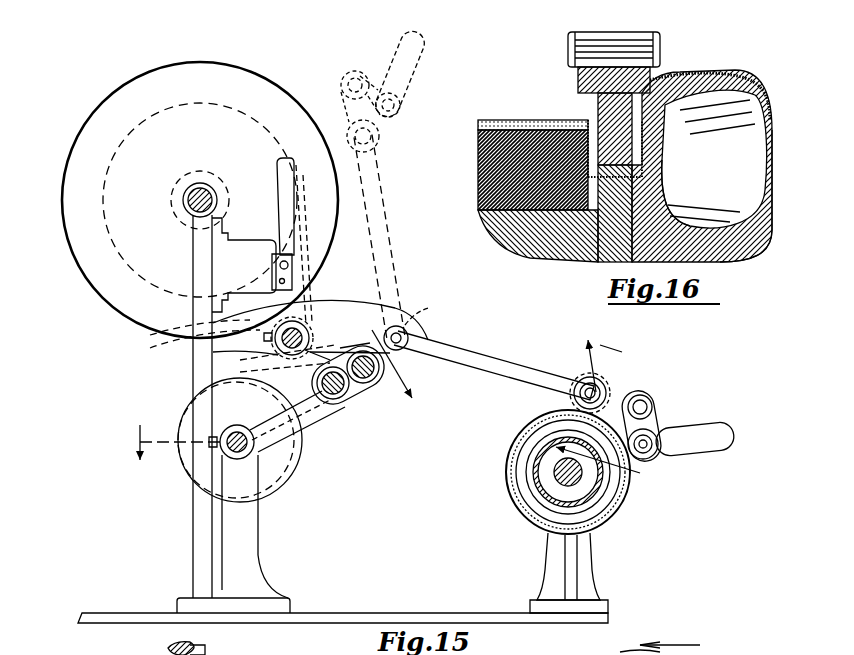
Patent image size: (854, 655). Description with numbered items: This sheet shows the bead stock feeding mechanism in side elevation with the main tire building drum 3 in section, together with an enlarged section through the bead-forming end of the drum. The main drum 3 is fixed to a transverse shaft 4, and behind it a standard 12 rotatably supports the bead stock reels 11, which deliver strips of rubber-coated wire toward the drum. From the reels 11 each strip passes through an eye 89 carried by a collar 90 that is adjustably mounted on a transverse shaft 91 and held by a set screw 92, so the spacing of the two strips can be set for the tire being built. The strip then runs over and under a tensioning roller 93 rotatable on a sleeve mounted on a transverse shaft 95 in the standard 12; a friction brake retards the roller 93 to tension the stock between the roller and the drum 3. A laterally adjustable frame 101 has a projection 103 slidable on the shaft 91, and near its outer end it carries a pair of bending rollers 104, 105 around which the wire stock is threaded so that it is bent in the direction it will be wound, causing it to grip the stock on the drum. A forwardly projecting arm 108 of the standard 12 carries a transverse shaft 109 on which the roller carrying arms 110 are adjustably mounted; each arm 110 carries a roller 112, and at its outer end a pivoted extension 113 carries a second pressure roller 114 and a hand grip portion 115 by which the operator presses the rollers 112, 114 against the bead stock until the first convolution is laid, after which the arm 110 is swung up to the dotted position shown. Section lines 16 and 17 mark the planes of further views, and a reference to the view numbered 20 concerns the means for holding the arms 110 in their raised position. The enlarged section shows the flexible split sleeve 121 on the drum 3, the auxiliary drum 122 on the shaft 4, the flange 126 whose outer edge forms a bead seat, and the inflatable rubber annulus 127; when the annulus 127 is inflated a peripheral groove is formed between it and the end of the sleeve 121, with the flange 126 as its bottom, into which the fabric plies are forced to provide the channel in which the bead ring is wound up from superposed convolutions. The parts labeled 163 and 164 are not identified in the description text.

In FIG. 15, the main tire building drum 3 is at (618, 503).
In FIG. 16, the main tire building drum 3 is at (518, 238).
In FIG. 15, the transverse shaft 4 is at (555, 470).
In FIG. 15, the bead stock reels 11 is at (85, 135).
In FIG. 15, the standard 12 is at (193, 556).
In FIG. 15, the section line 16— 16 is at (616, 416).
In FIG. 15, the section line 17— 17 is at (272, 395).
In FIG. 15, the figure reference 20 is at (452, 643).
In FIG. 15, the eyes 89 is at (325, 355).
In FIG. 15, the collar 90 is at (313, 320).
In FIG. 15, the transverse shaft 91 is at (274, 349).
In FIG. 15, the set screw 92 is at (210, 345).
In FIG. 15, the tensioning roller 93 is at (292, 478).
In FIG. 15, the transverse shaft 95 is at (238, 462).
In FIG. 15, the frame 101 is at (318, 420).
In FIG. 15, the projection 103 is at (270, 382).
In FIG. 15, the bending roller 104 is at (344, 400).
In FIG. 15, the bending roller 105 is at (366, 385).
In FIG. 15, the forwardly projecting arm 108 is at (396, 318).
In FIG. 15, the transverse shaft 109 is at (410, 350).
In FIG. 15, the roller carrying arms 110 is at (495, 365).
In FIG. 15, the roller 112 is at (582, 380).
In FIG. 16, the roller 112 is at (598, 104).
In FIG. 15, the pivoted extension 113 is at (655, 412).
In FIG. 15, the second pressure roller 114 is at (660, 452).
In FIG. 15, the hand grip portion 115 is at (718, 438).
In FIG. 16, the flexible split sleeve 121 is at (512, 135).
In FIG. 16, the auxiliary drum 122 is at (742, 242).
In FIG. 16, the flange 126 is at (655, 190).
In FIG. 16, the inflatable rubber annulus 127 is at (720, 108).
In FIG. 15, the bracket 163 is at (246, 237).
In FIG. 15, the lever 164 is at (278, 168).